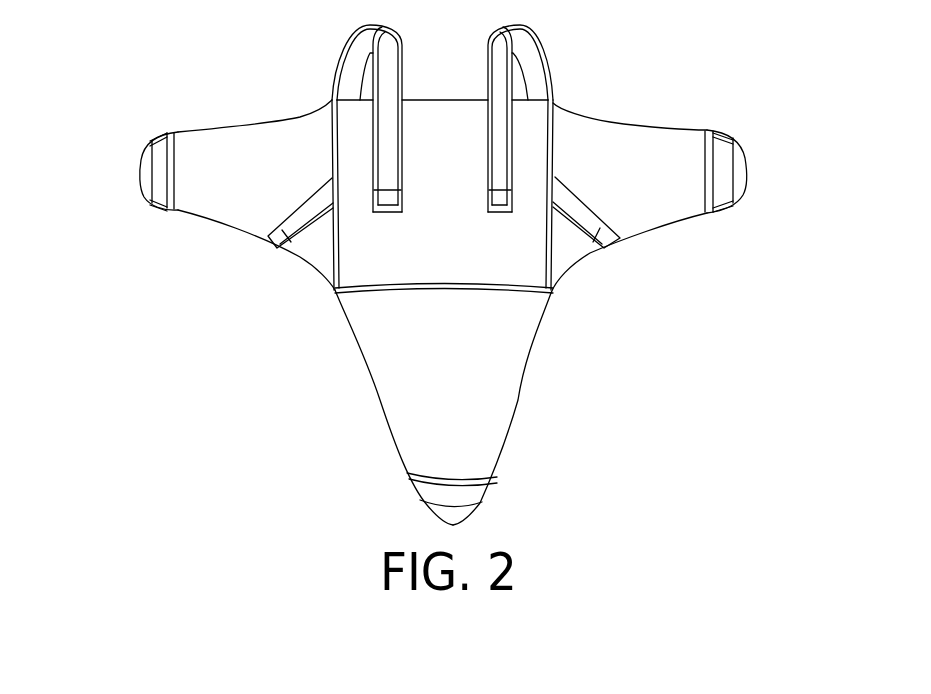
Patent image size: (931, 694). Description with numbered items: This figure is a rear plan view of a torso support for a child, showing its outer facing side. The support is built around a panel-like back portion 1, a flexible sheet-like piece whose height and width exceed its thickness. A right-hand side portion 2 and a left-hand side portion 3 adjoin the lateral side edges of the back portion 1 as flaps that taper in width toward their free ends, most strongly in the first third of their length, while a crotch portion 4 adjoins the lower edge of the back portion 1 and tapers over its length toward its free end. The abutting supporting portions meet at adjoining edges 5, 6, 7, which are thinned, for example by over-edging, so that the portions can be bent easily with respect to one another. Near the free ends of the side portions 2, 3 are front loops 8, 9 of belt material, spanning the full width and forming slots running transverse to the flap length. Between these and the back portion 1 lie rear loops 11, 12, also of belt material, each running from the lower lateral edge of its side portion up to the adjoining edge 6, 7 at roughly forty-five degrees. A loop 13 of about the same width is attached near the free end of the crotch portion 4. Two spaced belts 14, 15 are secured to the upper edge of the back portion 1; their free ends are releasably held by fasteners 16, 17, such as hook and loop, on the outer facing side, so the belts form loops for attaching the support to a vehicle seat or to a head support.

The back portion 1 is at (443, 165).
The side portion 2 is at (234, 150).
The side portion 3 is at (647, 153).
The crotch portion 4 is at (473, 422).
The adjoining edge 5 is at (555, 136).
The adjoining edge 6 is at (330, 148).
The adjoining edge 7 is at (428, 290).
The front loop 8 is at (162, 168).
The front loop 9 is at (726, 158).
The rear loop 11 is at (283, 240).
The rear loop 12 is at (607, 247).
The loop 13 is at (468, 495).
The belt 14 is at (360, 53).
The belt 15 is at (522, 40).
The fastener 16 is at (392, 180).
The fastener 17 is at (497, 187).